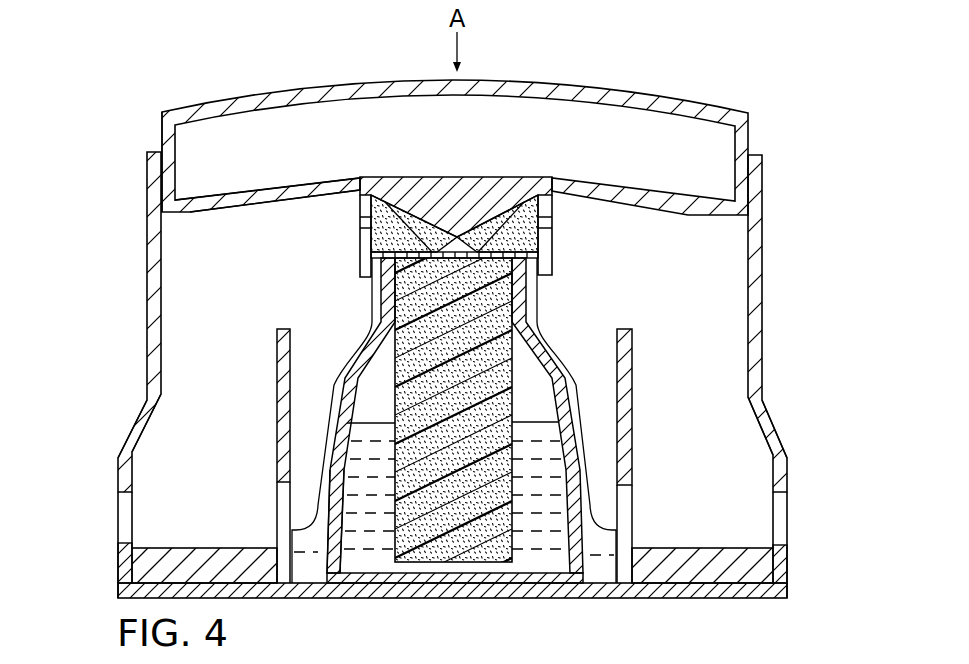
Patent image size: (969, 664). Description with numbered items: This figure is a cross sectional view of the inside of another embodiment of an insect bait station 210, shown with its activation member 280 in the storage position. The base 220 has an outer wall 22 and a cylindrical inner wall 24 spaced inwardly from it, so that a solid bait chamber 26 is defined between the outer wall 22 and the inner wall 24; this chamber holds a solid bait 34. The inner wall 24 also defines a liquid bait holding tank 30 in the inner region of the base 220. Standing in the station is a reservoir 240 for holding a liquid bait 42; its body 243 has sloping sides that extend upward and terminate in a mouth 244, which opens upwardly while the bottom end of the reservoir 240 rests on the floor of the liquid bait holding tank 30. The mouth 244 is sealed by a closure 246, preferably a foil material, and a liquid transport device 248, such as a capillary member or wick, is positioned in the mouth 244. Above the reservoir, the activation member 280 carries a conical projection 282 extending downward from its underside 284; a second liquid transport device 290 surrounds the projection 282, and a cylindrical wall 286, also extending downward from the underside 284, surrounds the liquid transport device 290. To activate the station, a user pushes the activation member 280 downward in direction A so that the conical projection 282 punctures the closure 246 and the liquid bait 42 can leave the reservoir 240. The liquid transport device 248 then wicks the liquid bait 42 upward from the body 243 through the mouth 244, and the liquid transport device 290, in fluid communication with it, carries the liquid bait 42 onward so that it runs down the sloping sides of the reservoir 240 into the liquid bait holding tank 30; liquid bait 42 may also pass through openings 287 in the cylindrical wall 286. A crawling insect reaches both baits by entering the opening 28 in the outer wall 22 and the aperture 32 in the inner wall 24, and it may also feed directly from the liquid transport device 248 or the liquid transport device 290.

The insect bait station 210 is at (116, 221).
The base 220 is at (113, 476).
The outer wall 22 is at (780, 477).
The inner wall 24 is at (625, 372).
The solid bait chamber 26 is at (165, 428).
The opening 28 is at (96, 521).
The liquid bait holding tank 30 is at (310, 334).
The aperture 32 is at (630, 503).
The solid bait 34 is at (140, 574).
The liquid bait 42 is at (583, 447).
The reservoir 240 is at (348, 577).
The body 243 is at (333, 448).
The mouth 244 is at (522, 312).
The closure 246 is at (514, 283).
The liquid transport device 248 is at (517, 382).
The activation member 280 is at (594, 90).
The conical projection 282 is at (455, 225).
The underside 284 is at (247, 204).
The cylindrical wall 286 is at (553, 250).
The openings 287 is at (345, 226).
The liquid transport device 290 is at (372, 246).